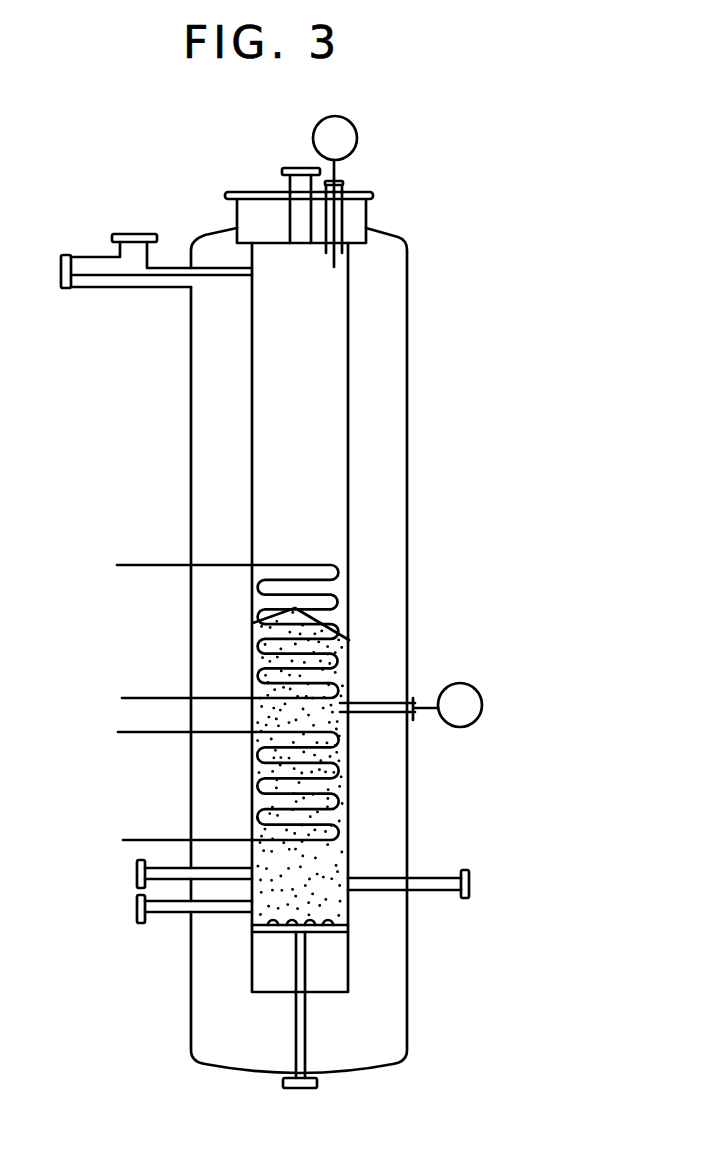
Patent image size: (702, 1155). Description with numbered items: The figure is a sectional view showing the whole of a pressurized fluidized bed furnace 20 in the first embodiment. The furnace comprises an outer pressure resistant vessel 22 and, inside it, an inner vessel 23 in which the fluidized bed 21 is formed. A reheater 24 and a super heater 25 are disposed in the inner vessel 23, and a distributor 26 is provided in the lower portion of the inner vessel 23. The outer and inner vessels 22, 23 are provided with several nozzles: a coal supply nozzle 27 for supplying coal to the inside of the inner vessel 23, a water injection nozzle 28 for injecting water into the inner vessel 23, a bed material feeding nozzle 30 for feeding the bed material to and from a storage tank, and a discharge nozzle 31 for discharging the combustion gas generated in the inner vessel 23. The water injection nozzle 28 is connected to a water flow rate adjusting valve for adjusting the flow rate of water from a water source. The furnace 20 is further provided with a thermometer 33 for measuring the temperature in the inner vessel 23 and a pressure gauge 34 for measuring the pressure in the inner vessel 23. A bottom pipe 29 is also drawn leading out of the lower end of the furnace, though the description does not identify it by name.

The pressurized fluidized bed furnace 20 is at (436, 262).
The fluidized bed 21 is at (348, 655).
The outer pressure resistant vessel 22 is at (407, 507).
The inner vessel 23 is at (350, 790).
The reheater 24 is at (258, 590).
The super heater 25 is at (255, 758).
The distributor 26 is at (330, 935).
The coal supply nozzle 27 is at (170, 915).
The water injection nozzle 28 is at (137, 875).
The bottom drain pipe 29 is at (317, 1075).
The bed material feeding nozzle 30 is at (435, 892).
The discharge nozzle 31 is at (98, 288).
The thermometer 33 is at (482, 708).
The pressure gauge 34 is at (357, 140).